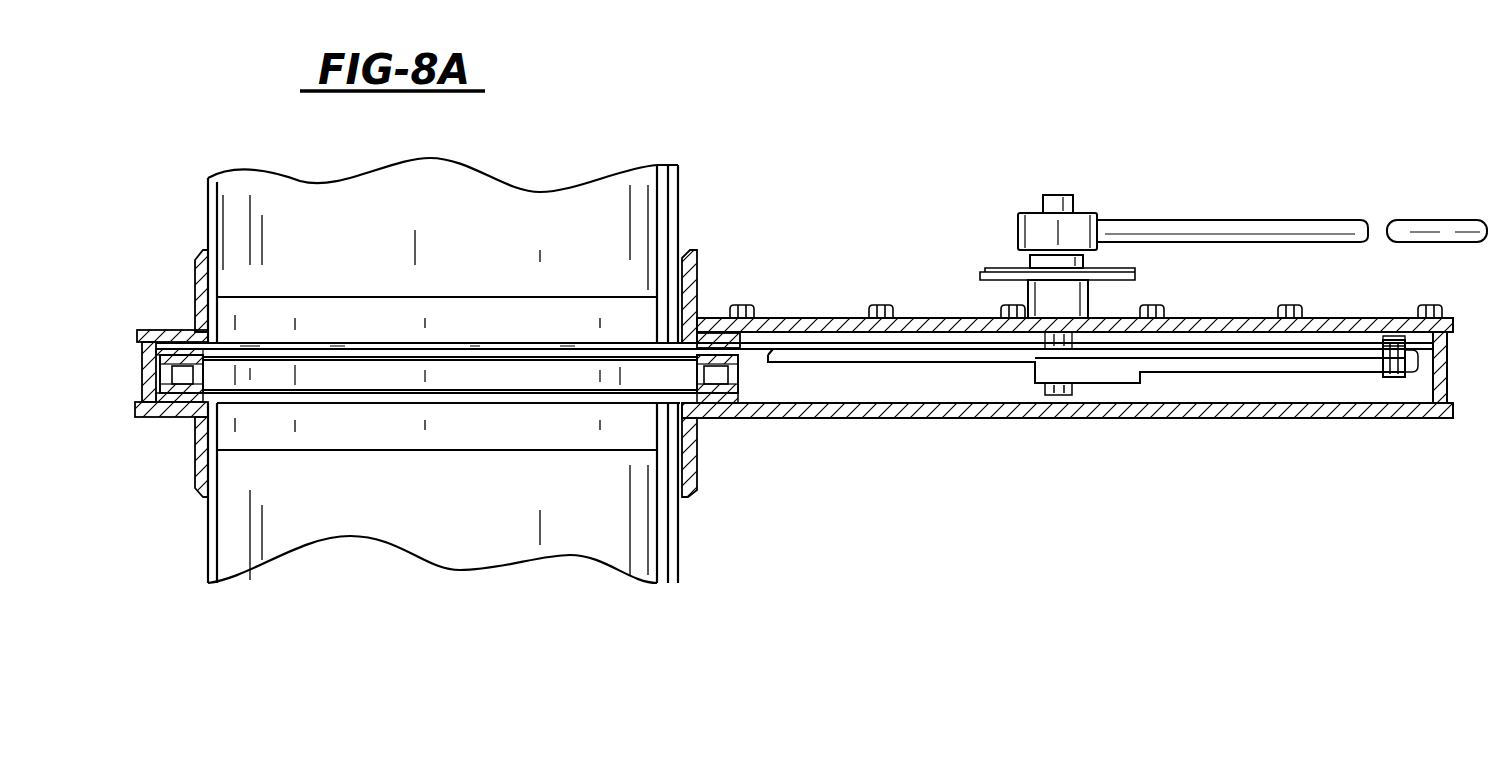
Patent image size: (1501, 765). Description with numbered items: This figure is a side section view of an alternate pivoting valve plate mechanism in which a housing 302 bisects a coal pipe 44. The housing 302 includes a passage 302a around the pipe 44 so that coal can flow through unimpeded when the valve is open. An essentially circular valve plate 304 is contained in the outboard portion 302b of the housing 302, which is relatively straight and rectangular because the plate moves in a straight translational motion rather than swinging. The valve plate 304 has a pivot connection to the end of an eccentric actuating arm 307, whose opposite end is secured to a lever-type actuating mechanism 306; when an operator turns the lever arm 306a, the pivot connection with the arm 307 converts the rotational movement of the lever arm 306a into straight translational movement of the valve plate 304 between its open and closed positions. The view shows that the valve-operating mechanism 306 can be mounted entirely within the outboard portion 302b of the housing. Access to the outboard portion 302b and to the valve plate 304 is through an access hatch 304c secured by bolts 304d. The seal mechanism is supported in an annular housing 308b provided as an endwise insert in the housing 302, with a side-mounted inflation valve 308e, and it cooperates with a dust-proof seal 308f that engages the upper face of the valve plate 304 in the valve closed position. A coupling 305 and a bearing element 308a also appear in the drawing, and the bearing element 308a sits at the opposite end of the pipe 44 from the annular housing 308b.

The pipe 44 is at (597, 197).
The housing 302 is at (176, 408).
The passage 302a is at (347, 397).
The outboard portion 302b is at (1448, 447).
The valve plate 304 is at (613, 352).
The access hatch 304c is at (933, 320).
The bolts 304d is at (890, 300).
The coupling 305 is at (1398, 345).
The lever-type actuating mechanism 306 is at (1094, 190).
The lever arm 306a is at (1270, 230).
The eccentric actuating arm 307 is at (1067, 445).
The bearing 308a is at (178, 378).
The annular housing 308b is at (718, 397).
The side-mounted inflation valve 308e is at (142, 376).
The dust-proof seal 308f is at (717, 345).